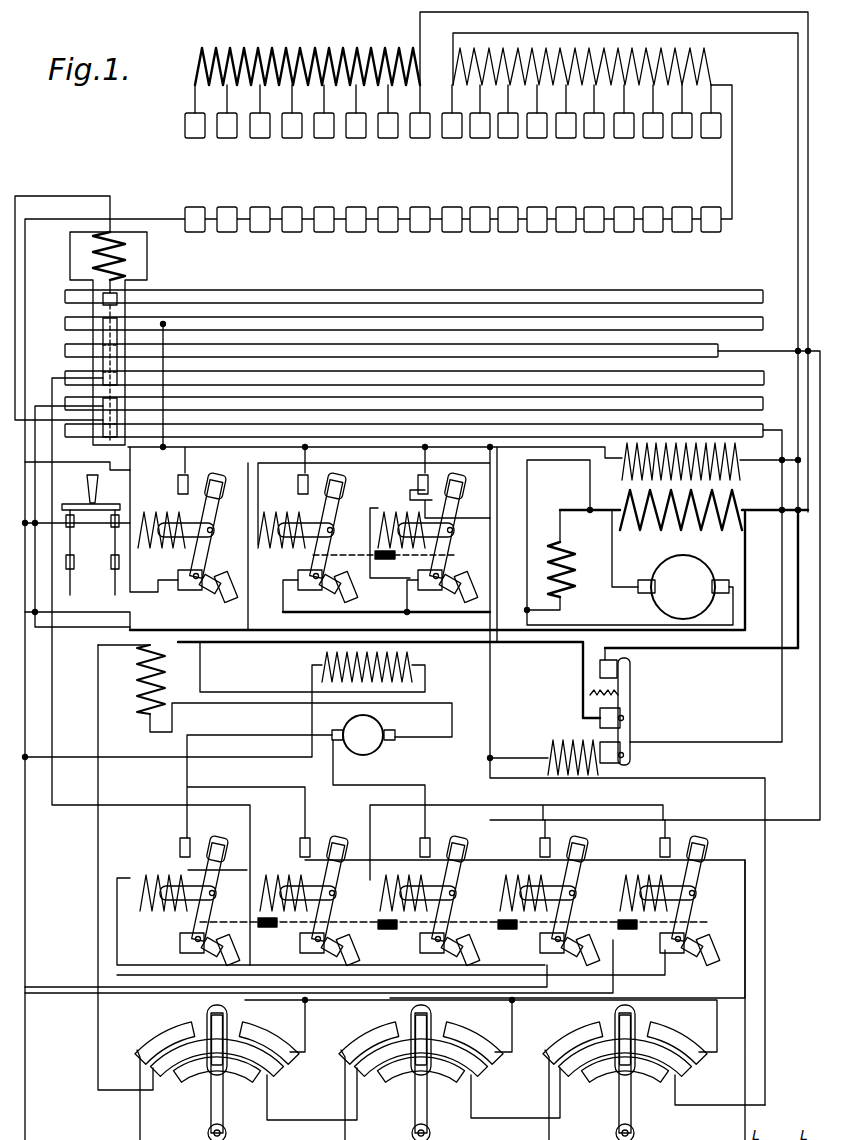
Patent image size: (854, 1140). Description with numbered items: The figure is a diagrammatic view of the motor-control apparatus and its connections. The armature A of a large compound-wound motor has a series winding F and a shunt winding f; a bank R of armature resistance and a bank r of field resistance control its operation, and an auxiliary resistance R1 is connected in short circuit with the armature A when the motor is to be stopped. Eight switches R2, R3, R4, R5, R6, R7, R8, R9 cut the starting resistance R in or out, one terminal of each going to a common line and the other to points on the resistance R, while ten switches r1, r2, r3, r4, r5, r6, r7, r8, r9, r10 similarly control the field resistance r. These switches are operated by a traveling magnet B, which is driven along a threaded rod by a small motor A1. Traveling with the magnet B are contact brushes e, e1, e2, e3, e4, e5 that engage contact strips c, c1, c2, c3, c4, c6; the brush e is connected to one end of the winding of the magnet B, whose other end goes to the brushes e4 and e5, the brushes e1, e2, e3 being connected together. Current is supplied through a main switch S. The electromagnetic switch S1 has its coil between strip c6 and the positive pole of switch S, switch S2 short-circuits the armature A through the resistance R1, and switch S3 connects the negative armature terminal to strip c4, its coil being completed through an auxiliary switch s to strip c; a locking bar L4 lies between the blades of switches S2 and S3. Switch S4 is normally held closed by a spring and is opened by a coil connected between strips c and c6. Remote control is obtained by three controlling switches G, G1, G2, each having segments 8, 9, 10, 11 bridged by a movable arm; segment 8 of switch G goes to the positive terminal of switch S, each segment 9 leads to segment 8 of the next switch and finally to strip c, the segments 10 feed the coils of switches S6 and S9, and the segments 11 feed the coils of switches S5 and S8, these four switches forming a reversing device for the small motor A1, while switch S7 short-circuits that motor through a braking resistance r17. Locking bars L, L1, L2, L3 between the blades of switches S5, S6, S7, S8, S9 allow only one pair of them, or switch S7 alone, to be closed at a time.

The bank of armature resistance R is at (346, 48).
The armature-resistance switch R2 is at (195, 136).
The armature-resistance switch R3 is at (227, 136).
The armature-resistance switch R4 is at (260, 136).
The armature-resistance switch R5 is at (292, 136).
The armature-resistance switch R6 is at (324, 136).
The armature-resistance switch R7 is at (356, 136).
The armature-resistance switch R8 is at (388, 136).
The armature-resistance switch R9 is at (420, 136).
The bank of field resistance r is at (690, 65).
The field-resistance switch r1 is at (452, 136).
The field-resistance switch r2 is at (480, 136).
The field-resistance switch r3 is at (508, 136).
The field-resistance switch r4 is at (537, 136).
The field-resistance switch r5 is at (566, 136).
The field-resistance switch r6 is at (594, 136).
The field-resistance switch r7 is at (624, 136).
The field-resistance switch r8 is at (653, 136).
The field-resistance switch r9 is at (682, 136).
The field-resistance switch r10 is at (711, 136).
The traveling magnet B is at (70, 262).
The contact brush e is at (117, 299).
The contact brush e1 is at (123, 351).
The contact brush e2 is at (123, 353).
The contact brush e3 is at (123, 380).
The contact brush e4 is at (123, 417).
The contact brush e5 is at (98, 438).
The contact strip c is at (414, 288).
The contact strip c1 is at (424, 326).
The contact strip c2 is at (408, 348).
The contact strip c3 is at (424, 379).
The contact strip c4 is at (424, 405).
The contact strip c6 is at (425, 431).
The main switch S is at (77, 546).
The electromagnetic switch S1 is at (188, 537).
The electromagnetic switch S2 is at (308, 537).
The electromagnetic switch S3 is at (428, 537).
The spring-closed switch S4 is at (577, 711).
The reversing switch S5 is at (190, 900).
The reversing switch S6 is at (310, 900).
The short-circuiting switch S7 is at (430, 900).
The reversing switch S8 is at (550, 900).
The reversing switch S9 is at (670, 900).
The auxiliary switch s is at (450, 504).
The locking bar L4 is at (366, 552).
The locking bar L is at (272, 930).
The locking bar L1 is at (388, 939).
The locking bar L2 is at (508, 939).
The locking bar L3 is at (628, 939).
The shunt winding f is at (640, 480).
The series winding F is at (735, 500).
The auxiliary bank of resistance R1 is at (563, 560).
The motor armature A is at (683, 587).
The small motor A1 is at (370, 745).
The braking resistance r17 is at (275, 691).
The controlling switch G is at (217, 1072).
The controlling switch G1 is at (421, 1072).
The controlling switch G2 is at (625, 1072).
The segment 8 is at (278, 1068).
The segment 9 is at (258, 1075).
The segment 10 is at (168, 1032).
The segment 11 is at (274, 1037).